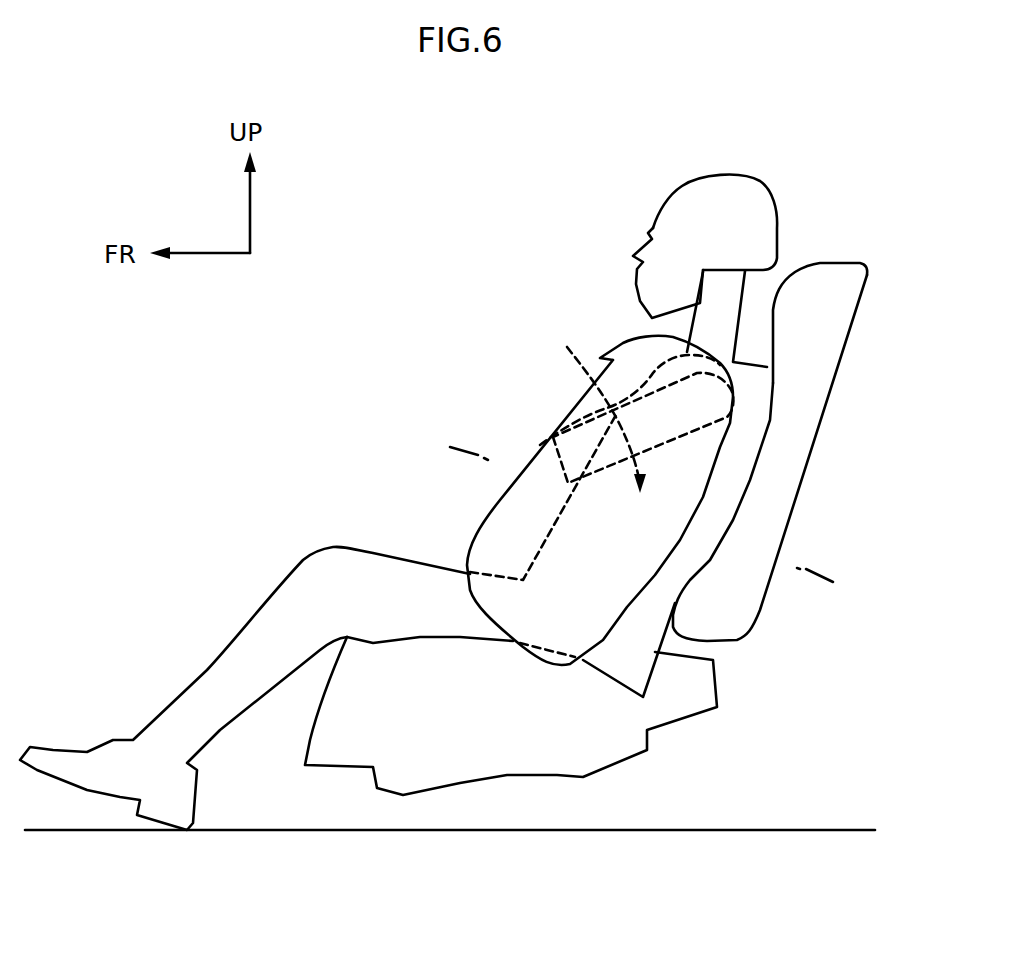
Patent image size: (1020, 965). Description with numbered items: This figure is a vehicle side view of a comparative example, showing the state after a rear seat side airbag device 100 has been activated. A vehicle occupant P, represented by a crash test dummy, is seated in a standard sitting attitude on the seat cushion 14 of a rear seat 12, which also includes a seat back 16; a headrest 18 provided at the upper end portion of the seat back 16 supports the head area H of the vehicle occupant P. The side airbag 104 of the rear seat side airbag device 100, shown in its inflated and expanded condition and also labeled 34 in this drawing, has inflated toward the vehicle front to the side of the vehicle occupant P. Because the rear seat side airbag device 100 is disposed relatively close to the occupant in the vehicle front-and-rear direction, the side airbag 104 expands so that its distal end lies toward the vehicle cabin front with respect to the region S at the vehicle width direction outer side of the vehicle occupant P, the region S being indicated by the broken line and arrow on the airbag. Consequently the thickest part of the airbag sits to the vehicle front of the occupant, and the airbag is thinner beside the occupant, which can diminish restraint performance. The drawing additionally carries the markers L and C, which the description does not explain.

The rear seat 12 is at (866, 260).
The seat cushion 14 is at (403, 655).
The seat back 16 is at (795, 445).
The headrest 18 is at (813, 279).
The airbag 34 is at (502, 503).
The rear seat side airbag device 100 is at (520, 363).
The side airbag 104 is at (540, 467).
The vehicle occupant P is at (633, 271).
The head area H is at (725, 183).
The region at the vehicle width direction outer side of the vehicle occupant S is at (599, 405).
The lumbar region L is at (678, 713).
The center line C is at (463, 446).